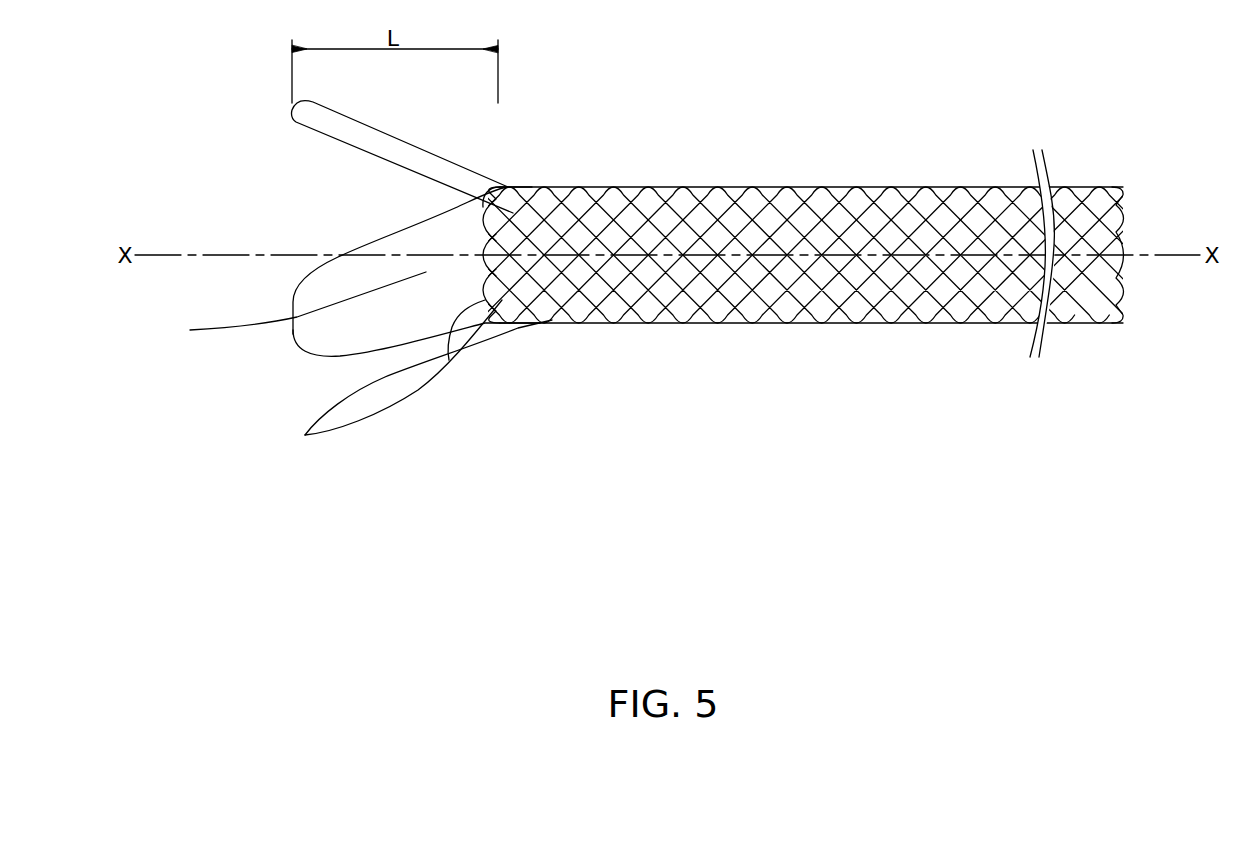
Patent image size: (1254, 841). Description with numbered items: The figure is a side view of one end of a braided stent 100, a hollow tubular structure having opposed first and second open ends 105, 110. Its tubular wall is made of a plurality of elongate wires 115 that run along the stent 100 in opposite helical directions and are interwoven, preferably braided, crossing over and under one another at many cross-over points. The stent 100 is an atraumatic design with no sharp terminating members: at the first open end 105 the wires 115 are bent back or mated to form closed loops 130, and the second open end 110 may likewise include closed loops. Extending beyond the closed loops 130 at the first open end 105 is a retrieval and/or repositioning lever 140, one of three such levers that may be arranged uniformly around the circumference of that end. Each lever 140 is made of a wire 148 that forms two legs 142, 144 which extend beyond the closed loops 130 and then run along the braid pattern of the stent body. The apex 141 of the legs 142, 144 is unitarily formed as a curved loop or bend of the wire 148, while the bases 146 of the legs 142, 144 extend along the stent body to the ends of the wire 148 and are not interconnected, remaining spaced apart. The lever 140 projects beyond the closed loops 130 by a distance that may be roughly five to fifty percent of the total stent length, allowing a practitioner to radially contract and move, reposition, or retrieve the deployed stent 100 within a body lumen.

The stent 100 is at (603, 131).
The first open end 105 is at (586, 395).
The second open end 110 is at (1129, 166).
The elongate wires 115 is at (518, 207).
The closed loops 130 is at (449, 360).
The retrieval and/or repositioning lever 140 is at (363, 165).
The apex 141 is at (297, 345).
The leg 142 is at (327, 362).
The leg 144 is at (293, 297).
The bases 146 is at (532, 188).
The wire 148 is at (292, 115).